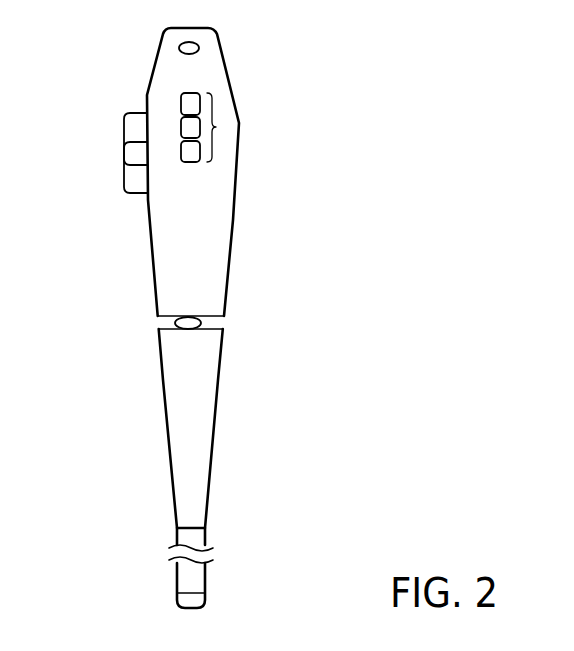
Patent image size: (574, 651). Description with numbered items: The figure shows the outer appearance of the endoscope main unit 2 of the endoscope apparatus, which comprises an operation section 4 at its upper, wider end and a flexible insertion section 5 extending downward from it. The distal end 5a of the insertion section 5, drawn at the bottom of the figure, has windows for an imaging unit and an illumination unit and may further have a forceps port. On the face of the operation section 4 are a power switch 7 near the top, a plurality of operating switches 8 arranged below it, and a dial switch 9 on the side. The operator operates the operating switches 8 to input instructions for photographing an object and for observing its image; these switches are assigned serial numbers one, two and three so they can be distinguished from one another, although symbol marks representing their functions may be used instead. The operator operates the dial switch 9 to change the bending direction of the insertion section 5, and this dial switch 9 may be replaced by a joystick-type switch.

The endoscope main unit 2 is at (262, 263).
The operation section 4 is at (237, 185).
The flexible insertion section 5 is at (218, 428).
The distal end 5a is at (206, 595).
The power switch 7 is at (199, 48).
The operating switches 8 is at (216, 127).
The dial switch 9 is at (124, 133).